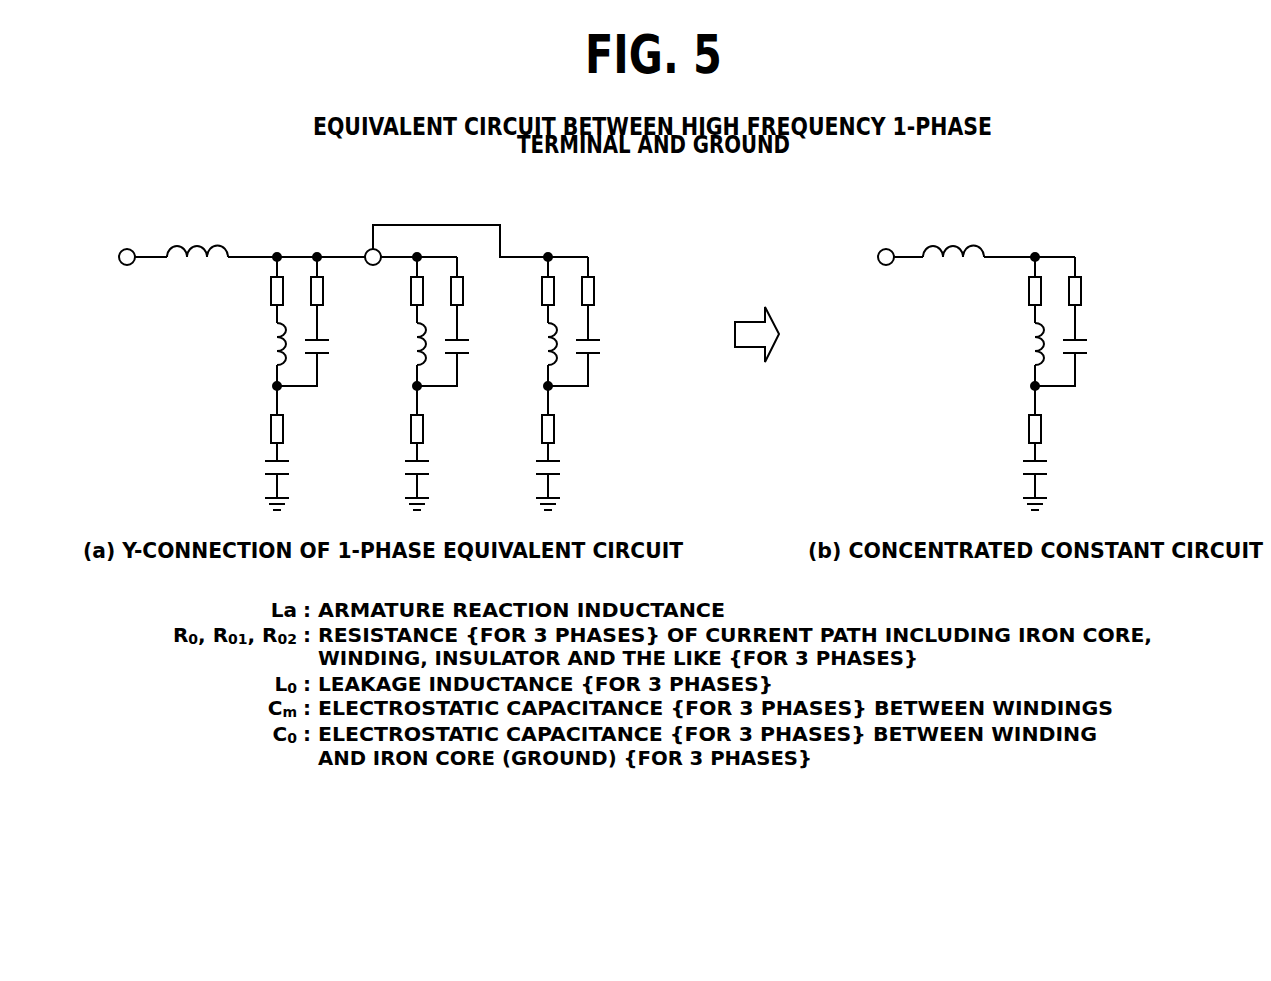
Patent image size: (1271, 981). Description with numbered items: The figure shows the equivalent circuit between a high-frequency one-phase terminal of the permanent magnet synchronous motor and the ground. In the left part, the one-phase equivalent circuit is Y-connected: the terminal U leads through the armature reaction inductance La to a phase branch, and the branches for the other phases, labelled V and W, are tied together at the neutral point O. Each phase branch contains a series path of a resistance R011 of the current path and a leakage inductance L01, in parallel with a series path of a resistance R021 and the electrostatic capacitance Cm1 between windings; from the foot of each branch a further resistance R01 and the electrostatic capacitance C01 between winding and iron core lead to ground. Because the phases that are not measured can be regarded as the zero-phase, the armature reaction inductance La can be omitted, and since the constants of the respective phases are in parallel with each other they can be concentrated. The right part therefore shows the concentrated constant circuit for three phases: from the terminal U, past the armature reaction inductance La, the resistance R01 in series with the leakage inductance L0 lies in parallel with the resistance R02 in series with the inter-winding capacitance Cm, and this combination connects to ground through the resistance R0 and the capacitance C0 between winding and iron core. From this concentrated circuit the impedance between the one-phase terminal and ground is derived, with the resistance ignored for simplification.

The armature reaction inductance La is at (178, 247).
The resistance of current path R011 is at (270, 291).
The leakage inductance L01 is at (272, 346).
The resistance of current path R021 is at (595, 291).
The electrostatic capacitance between windings Cm1 is at (602, 345).
The resistance of current path R01 is at (555, 430).
The electrostatic capacitance between winding and iron core C01 is at (561, 470).
The resistance of current path R02 is at (1082, 291).
The leakage inductance L0 is at (1031, 346).
The electrostatic capacitance between windings Cm is at (1088, 346).
The resistance of current path R0 is at (1042, 430).
The electrostatic capacitance between winding and iron core C0 is at (1048, 470).
The one-phase terminal U is at (128, 249).
The phase terminal V is at (479, 258).
The phase terminal W is at (614, 258).
The neutral point O is at (367, 251).